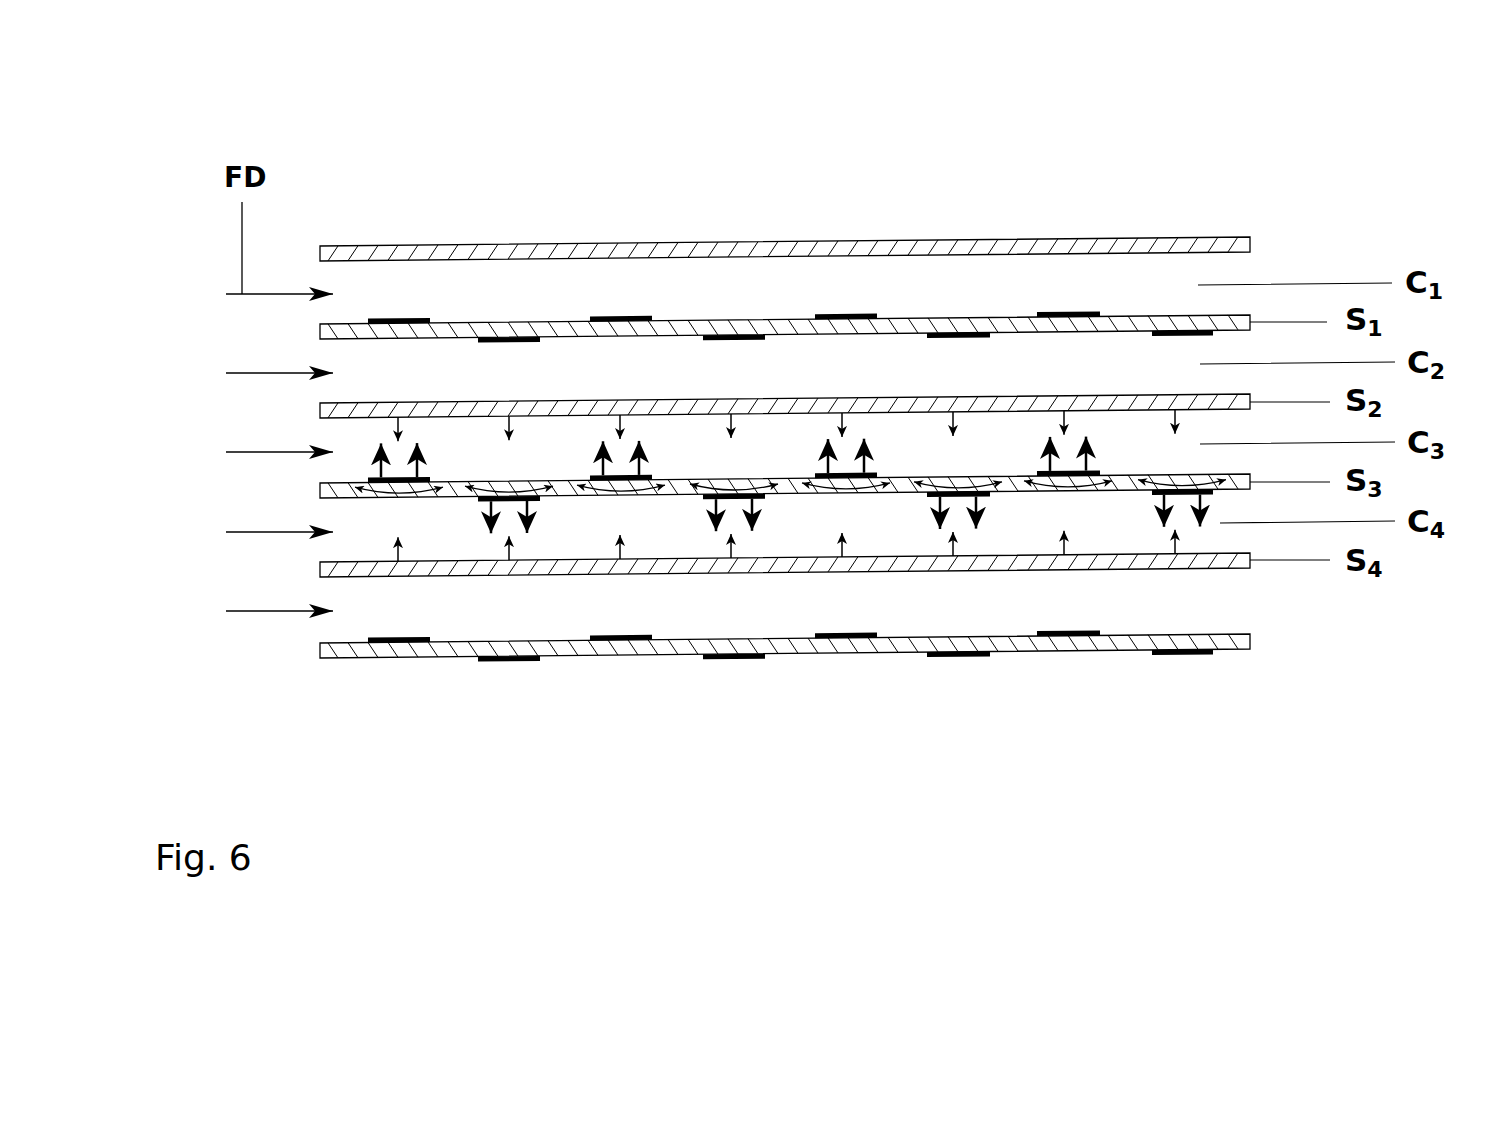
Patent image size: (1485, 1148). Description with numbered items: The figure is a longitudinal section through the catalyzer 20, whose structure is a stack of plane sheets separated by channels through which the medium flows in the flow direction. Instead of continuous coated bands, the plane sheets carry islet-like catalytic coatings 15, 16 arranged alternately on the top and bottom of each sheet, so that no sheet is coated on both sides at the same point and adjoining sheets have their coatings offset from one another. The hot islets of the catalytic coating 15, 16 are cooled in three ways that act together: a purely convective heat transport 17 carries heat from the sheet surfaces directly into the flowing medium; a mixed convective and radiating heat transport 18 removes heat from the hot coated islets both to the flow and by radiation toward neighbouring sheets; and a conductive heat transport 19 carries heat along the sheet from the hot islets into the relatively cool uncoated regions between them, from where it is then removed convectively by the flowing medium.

The islet-like catalytic coating 15 is at (1073, 313).
The islet-like catalytic coating 16 is at (955, 338).
The purely convective heat transport 17 is at (624, 438).
The mixed convective and radiating heat transport 18 is at (642, 467).
The conductive heat transport 19 is at (600, 495).
The catalyzer 20 is at (1278, 162).